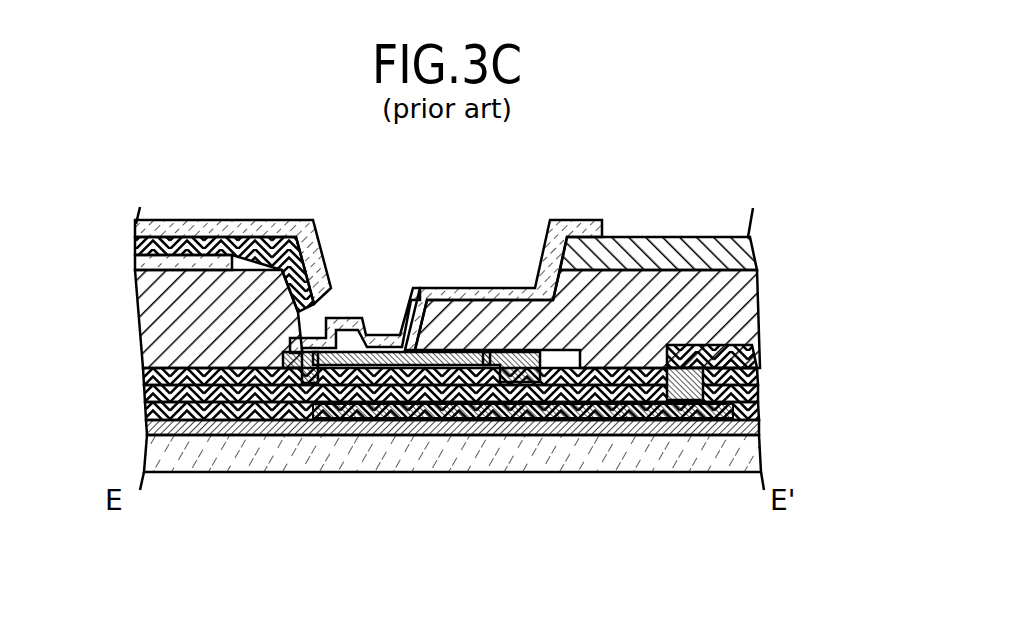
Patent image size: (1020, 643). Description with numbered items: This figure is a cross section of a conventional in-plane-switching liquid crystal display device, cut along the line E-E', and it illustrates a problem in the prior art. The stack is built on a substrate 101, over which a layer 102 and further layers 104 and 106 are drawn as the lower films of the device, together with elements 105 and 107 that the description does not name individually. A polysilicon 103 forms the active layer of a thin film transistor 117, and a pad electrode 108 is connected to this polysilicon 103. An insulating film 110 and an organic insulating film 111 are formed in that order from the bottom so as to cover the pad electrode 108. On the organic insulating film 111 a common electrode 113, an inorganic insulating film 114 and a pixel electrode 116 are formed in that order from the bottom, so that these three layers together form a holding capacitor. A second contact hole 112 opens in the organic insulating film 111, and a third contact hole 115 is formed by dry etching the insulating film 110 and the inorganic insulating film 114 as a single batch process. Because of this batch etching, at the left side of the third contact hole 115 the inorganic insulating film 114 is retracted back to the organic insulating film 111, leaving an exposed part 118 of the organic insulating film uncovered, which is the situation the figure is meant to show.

The substrate 101 is at (740, 457).
The buffer layer 102 is at (760, 427).
The polysilicon 103 is at (578, 418).
The gate insulating layer 104 is at (753, 408).
The active layer 105 is at (660, 370).
The insulating layer 106 is at (757, 388).
The drain electrode 107 is at (532, 385).
The pad electrode 108 is at (373, 365).
The insulating film 110 is at (753, 375).
The organic insulating film 111 is at (760, 294).
The second contact hole 112 is at (137, 307).
The common electrode 113 is at (140, 262).
The inorganic insulating film 114 is at (140, 248).
The third contact hole 115 is at (430, 320).
The pixel electrode 116 is at (140, 228).
The thin film transistor 117 is at (703, 400).
The exposed part of the organic insulating film 118 is at (305, 330).